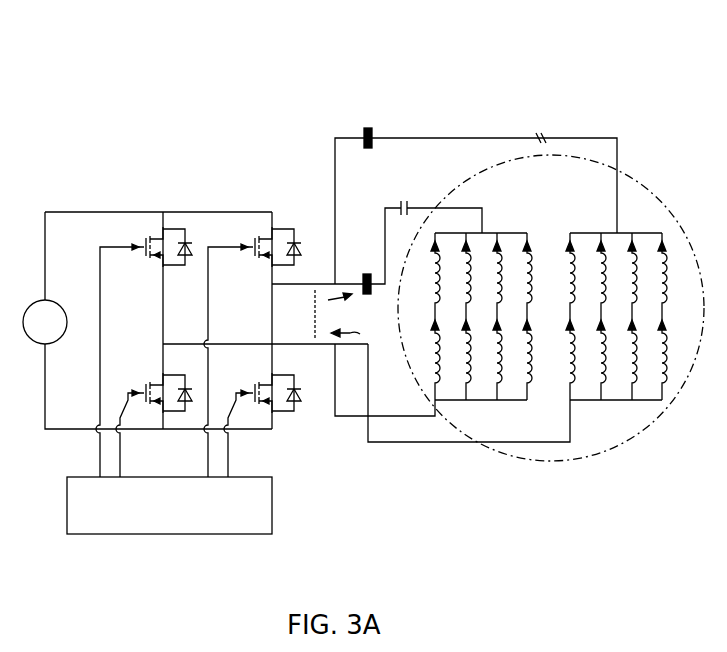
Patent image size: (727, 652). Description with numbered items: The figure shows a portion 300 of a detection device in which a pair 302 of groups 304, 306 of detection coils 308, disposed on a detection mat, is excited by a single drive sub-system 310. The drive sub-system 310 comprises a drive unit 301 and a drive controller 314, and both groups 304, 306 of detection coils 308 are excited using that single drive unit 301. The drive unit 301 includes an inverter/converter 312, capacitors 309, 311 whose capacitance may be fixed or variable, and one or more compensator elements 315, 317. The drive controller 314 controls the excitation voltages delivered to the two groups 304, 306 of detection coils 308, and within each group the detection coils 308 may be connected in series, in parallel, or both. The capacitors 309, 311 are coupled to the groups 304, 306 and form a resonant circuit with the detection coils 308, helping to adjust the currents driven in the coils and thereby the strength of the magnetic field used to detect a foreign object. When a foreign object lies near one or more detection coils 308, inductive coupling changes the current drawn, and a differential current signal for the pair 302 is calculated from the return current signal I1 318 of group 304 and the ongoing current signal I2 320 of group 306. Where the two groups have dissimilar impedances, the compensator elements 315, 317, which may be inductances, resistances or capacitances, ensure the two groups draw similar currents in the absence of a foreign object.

The portion of a detection device 300 is at (592, 52).
The drive unit 301 is at (250, 291).
The pair of groups of detection coils 302 is at (551, 321).
The group of detection coils 304 is at (620, 404).
The group of detection coils 306 is at (501, 349).
The detection coil 308 is at (571, 272).
The capacitor 309 is at (537, 136).
The drive sub-system 310 is at (216, 196).
The capacitor 311 is at (401, 206).
The inverter/converter 312 is at (80, 212).
The drive controller 314 is at (277, 506).
The compensator element 315 is at (364, 130).
The compensator element 317 is at (363, 278).
The return current signal I1 318 is at (362, 336).
The ongoing current signal I2 320 is at (345, 298).